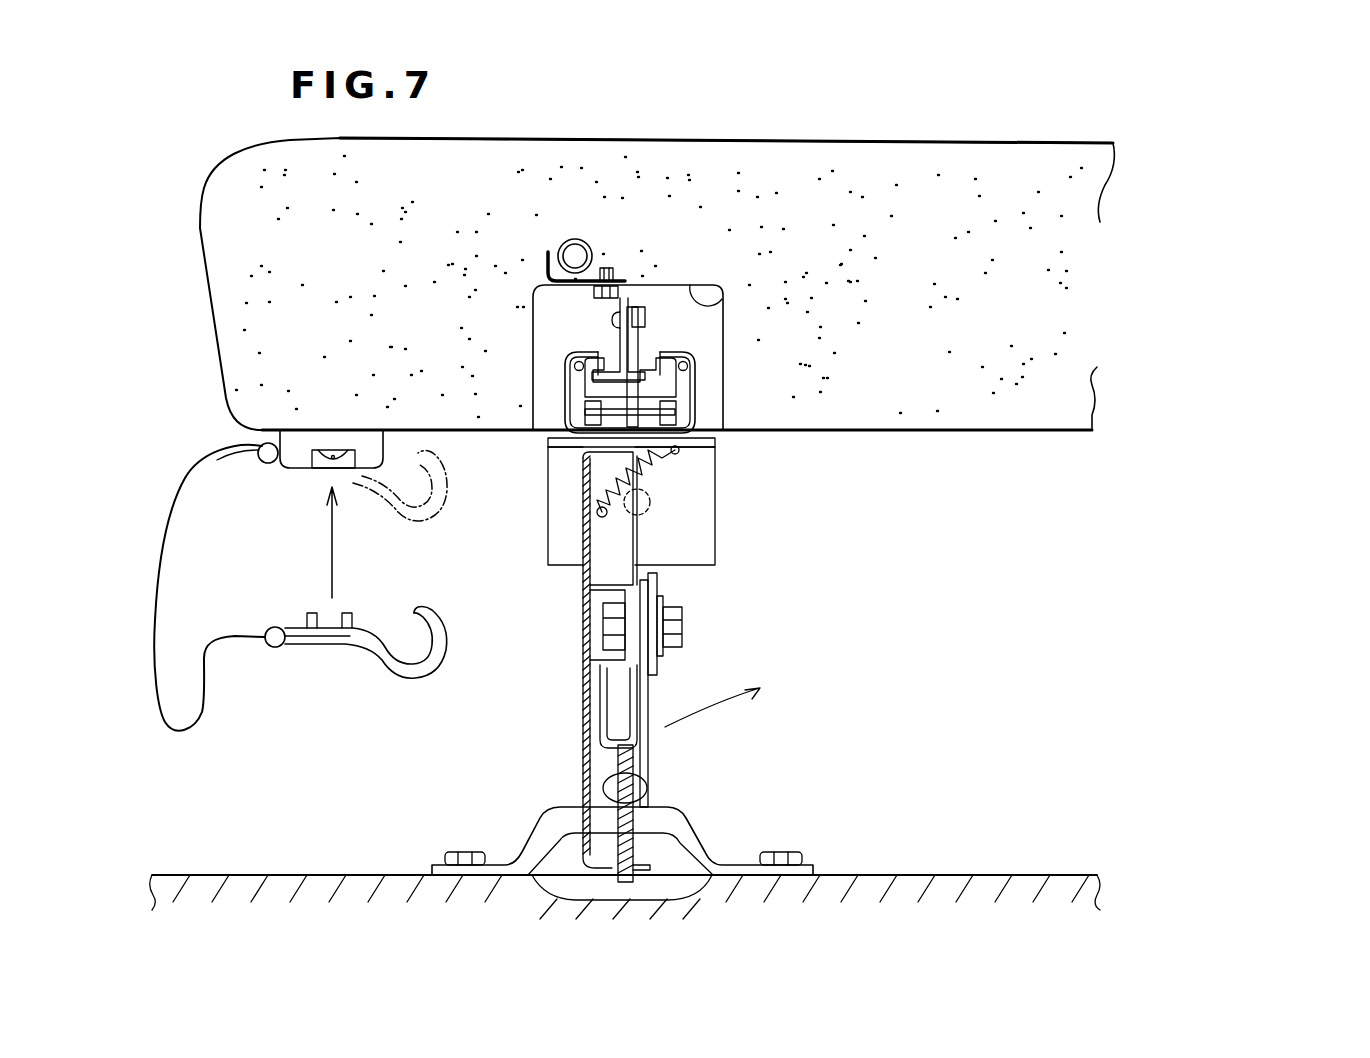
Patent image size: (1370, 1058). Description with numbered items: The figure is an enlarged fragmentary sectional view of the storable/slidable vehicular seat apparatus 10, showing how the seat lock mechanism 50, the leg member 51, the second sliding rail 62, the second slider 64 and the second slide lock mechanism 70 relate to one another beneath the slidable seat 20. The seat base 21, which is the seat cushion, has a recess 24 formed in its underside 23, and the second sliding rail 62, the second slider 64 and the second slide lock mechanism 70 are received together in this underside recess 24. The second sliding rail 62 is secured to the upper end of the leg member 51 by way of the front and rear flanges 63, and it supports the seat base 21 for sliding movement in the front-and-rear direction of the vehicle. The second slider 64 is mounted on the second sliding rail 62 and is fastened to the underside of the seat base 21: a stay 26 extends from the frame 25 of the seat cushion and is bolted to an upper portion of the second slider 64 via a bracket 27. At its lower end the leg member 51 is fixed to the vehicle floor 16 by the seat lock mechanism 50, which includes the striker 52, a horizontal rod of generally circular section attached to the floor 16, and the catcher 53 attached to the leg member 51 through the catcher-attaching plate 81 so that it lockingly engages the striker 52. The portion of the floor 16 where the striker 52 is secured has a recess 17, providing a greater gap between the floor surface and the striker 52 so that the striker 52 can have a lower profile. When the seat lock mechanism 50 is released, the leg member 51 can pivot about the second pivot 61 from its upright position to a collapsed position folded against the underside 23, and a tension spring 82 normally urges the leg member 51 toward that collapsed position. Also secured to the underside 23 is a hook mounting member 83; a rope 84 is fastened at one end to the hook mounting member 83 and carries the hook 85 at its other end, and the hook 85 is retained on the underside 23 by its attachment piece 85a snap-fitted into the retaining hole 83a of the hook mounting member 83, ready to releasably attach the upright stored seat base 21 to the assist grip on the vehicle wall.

The storable/slidable vehicular seat apparatus 10 is at (1322, 213).
The vehicle floor 16 is at (1060, 873).
The recess 17 is at (648, 902).
The slidable seat 20 is at (1105, 137).
The seat base 21 is at (965, 178).
The underside of the seat base 23 is at (983, 431).
The underside recess 24 is at (715, 295).
The frame 25 is at (573, 236).
The stay 26 is at (611, 287).
The bracket 27 is at (645, 293).
The seat lock mechanism 50 is at (712, 619).
The leg member 51 is at (578, 640).
The striker 52 is at (556, 835).
The catcher 53 is at (624, 766).
The second pivot 61 is at (652, 506).
The second sliding rail 62 is at (700, 405).
The front and rear flanges 63 is at (710, 550).
The second slider 64 is at (660, 375).
The second slide lock mechanism 70 is at (600, 339).
The catcher-attaching plate 81 is at (650, 730).
The tension spring 82 is at (682, 460).
The hook mounting member 83 is at (347, 437).
The retaining hole 83a is at (322, 466).
The rope 84 is at (205, 702).
The hook 85 is at (403, 523).
The attachment piece 85a is at (305, 620).